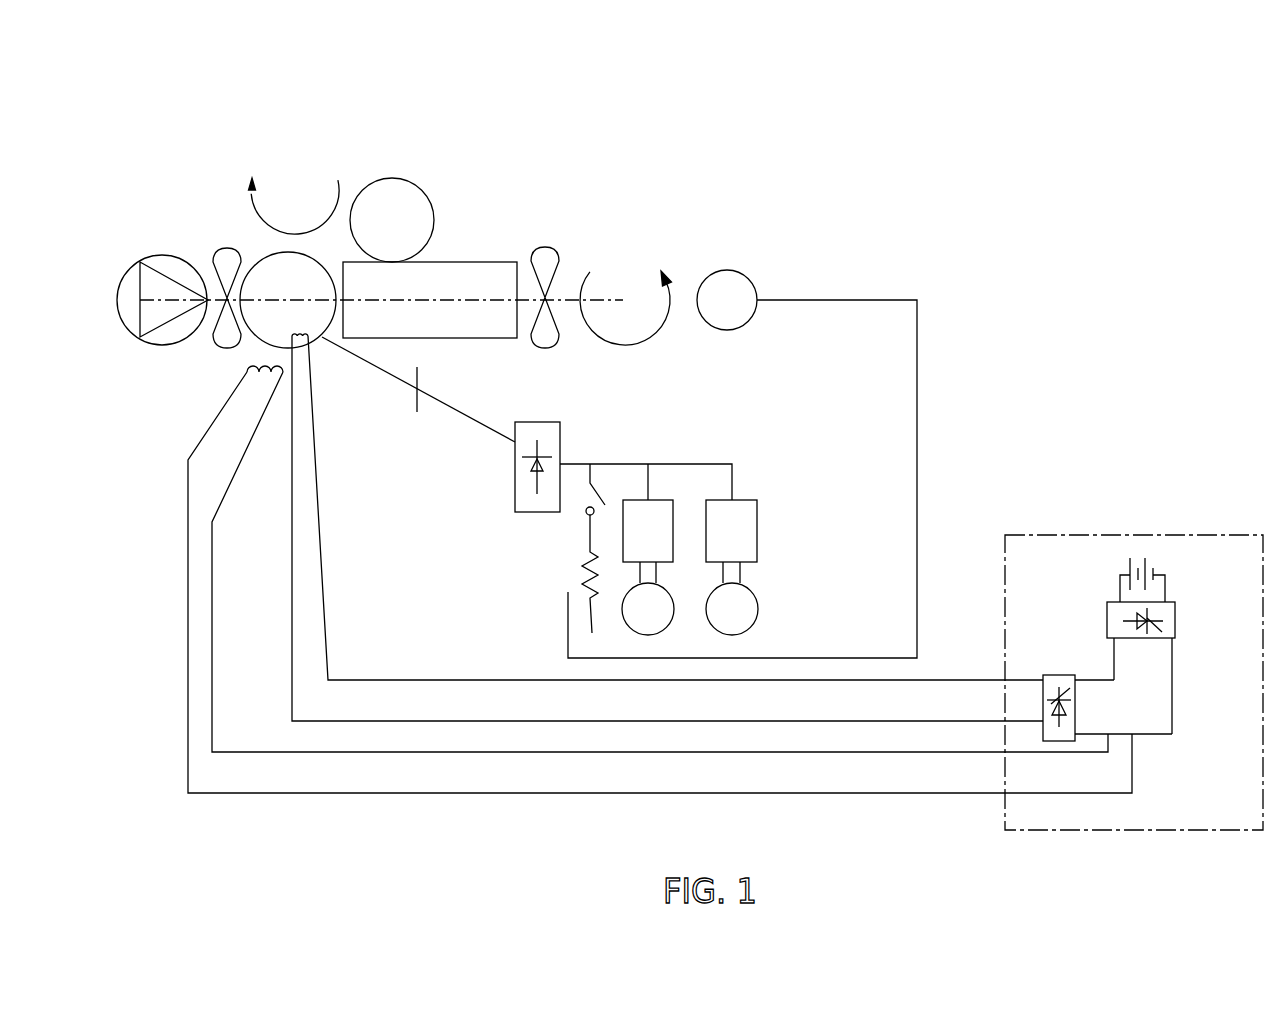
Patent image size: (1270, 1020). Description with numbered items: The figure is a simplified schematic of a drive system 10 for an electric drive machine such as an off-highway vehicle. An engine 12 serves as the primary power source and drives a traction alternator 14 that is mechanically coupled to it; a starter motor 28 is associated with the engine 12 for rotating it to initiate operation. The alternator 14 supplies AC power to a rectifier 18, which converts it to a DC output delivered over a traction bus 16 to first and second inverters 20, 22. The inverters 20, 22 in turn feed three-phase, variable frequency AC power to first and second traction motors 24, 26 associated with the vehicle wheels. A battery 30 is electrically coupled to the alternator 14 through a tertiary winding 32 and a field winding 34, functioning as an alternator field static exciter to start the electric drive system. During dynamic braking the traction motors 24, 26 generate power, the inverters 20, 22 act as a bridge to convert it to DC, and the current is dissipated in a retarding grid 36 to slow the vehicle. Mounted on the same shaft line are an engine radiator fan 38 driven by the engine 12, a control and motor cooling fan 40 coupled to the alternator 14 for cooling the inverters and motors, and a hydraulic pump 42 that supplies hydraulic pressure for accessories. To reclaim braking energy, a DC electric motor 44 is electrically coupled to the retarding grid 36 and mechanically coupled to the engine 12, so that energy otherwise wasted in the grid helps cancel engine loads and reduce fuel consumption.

The drive system 10 is at (678, 160).
The engine 12 is at (474, 262).
The traction alternator 14 is at (263, 252).
The traction bus 16 is at (632, 435).
The rectifier 18 is at (558, 422).
The first inverter 20 is at (660, 500).
The second inverter 22 is at (752, 500).
The first traction motor 24 is at (672, 600).
The second traction motor 26 is at (758, 607).
The starter motor 28 is at (392, 178).
The battery 30 is at (1133, 535).
The tertiary winding 32 is at (342, 596).
The field winding 34 is at (170, 497).
The retarding grid 36 is at (566, 573).
The engine radiator fan 38 is at (545, 247).
The control and motor cooling fan 40 is at (218, 252).
The hydraulic pump 42 is at (122, 297).
The DC electric motor 44 is at (727, 270).